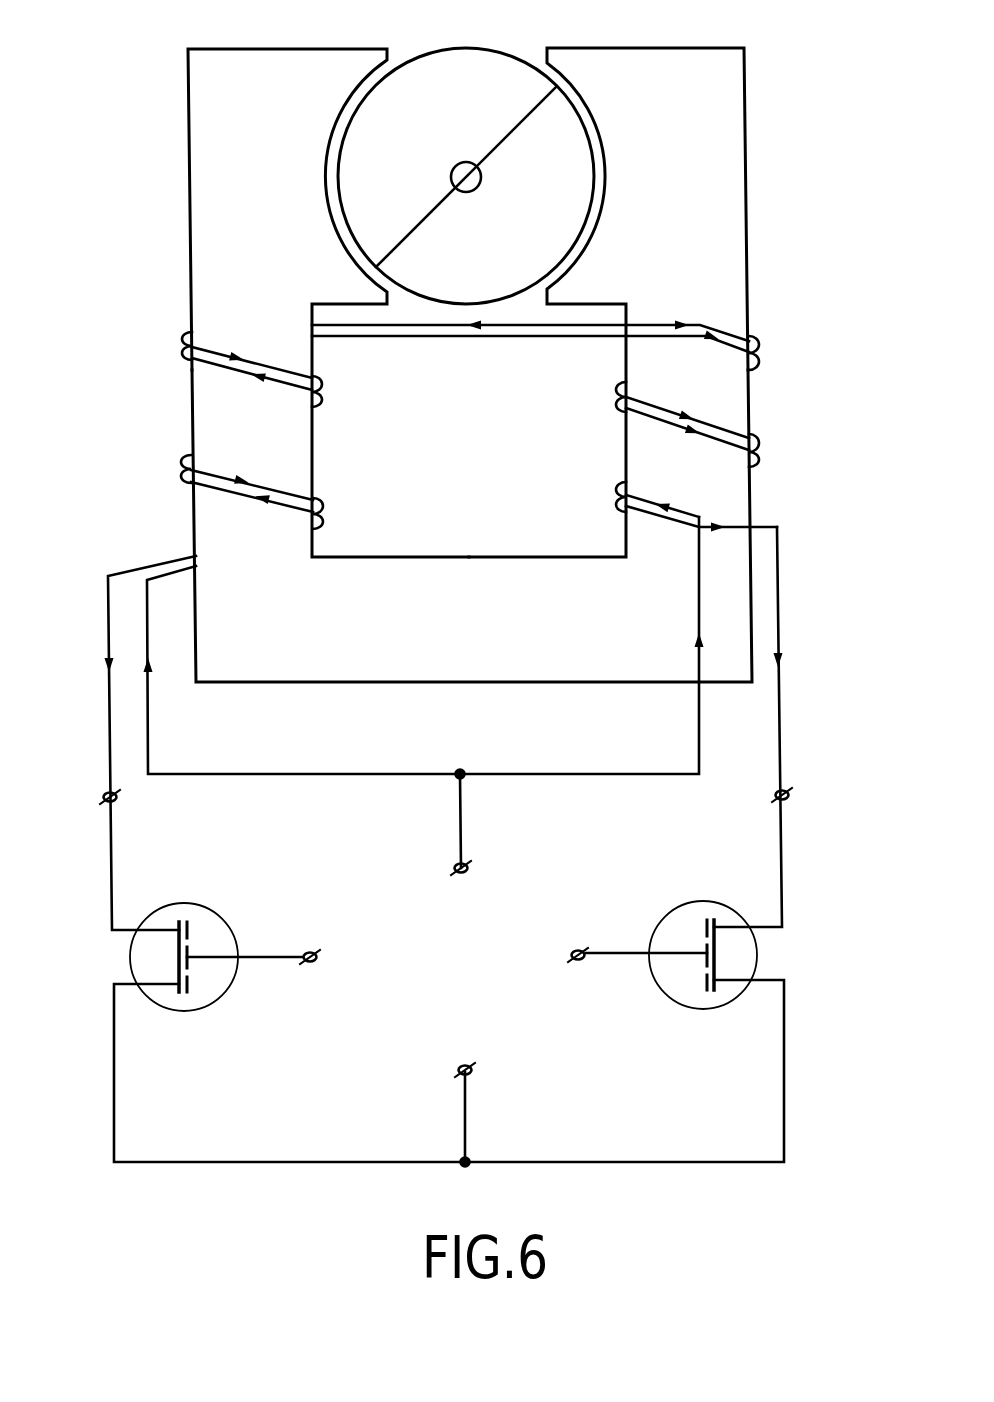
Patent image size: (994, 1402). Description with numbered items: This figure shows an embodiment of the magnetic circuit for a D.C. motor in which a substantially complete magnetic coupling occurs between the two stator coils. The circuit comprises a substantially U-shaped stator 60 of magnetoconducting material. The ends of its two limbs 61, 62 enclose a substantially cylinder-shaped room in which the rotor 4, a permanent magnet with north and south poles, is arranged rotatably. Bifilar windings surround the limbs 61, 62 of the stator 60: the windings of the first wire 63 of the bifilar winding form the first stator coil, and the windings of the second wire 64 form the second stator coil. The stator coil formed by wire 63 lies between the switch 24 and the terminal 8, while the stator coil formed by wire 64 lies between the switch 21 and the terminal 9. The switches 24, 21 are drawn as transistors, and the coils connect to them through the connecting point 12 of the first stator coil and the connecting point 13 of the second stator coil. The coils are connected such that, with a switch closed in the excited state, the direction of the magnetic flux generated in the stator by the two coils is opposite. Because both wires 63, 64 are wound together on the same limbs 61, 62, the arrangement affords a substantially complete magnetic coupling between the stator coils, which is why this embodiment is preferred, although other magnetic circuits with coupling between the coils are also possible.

The rotor 4 is at (444, 46).
The terminal 8 is at (469, 865).
The terminal 9 is at (472, 1070).
The connecting point of the stator coil 12 is at (102, 797).
The connecting point of the stator coil 13 is at (790, 795).
The switch 21 is at (704, 937).
The switch 24 is at (188, 945).
The stator 60 is at (333, 668).
The limb of the stator 61 is at (218, 415).
The limb of the stator 62 is at (733, 398).
The first wire of the bifilar winding 63 is at (314, 360).
The second wire of the bifilar winding 64 is at (316, 358).